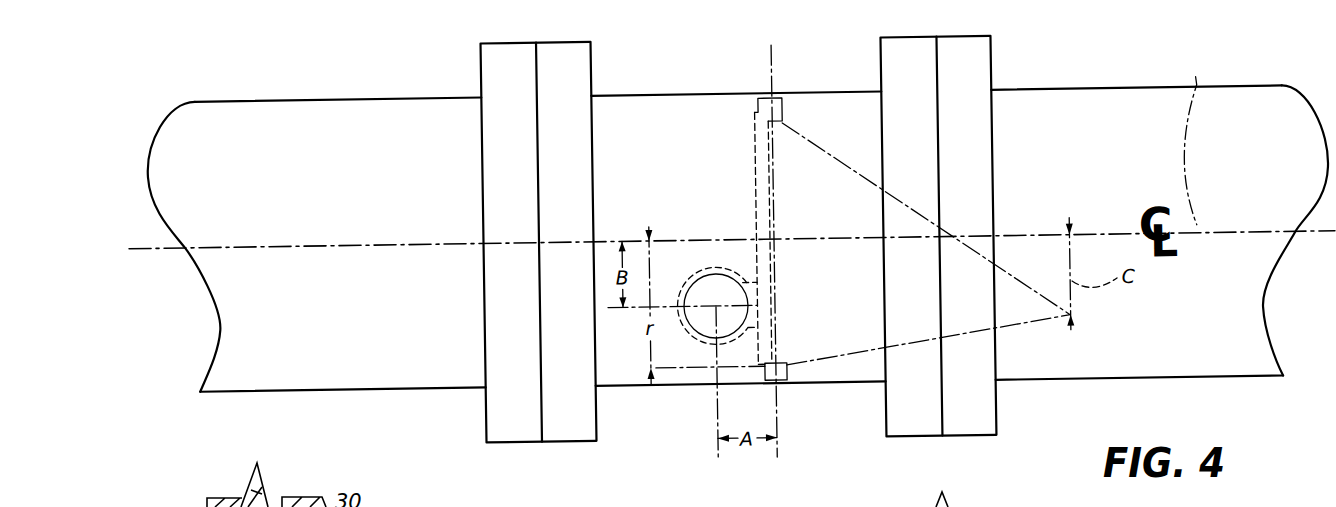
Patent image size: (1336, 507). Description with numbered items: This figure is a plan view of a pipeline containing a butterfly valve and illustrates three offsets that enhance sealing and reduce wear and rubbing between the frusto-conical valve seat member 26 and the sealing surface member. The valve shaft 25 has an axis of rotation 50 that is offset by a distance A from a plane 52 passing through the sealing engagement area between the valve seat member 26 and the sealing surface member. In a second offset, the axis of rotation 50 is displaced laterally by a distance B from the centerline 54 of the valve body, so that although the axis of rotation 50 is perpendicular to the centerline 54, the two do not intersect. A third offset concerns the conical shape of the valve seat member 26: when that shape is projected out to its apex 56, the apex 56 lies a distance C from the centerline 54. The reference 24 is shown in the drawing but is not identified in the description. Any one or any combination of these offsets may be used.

The reflector plate 24 is at (758, 138).
The valve shaft 25 is at (705, 290).
The valve seat member 26 is at (776, 114).
The axis of rotation 50 is at (716, 306).
The plane 52 is at (776, 411).
The centerline 54 is at (1255, 214).
The apex 56 is at (1071, 328).